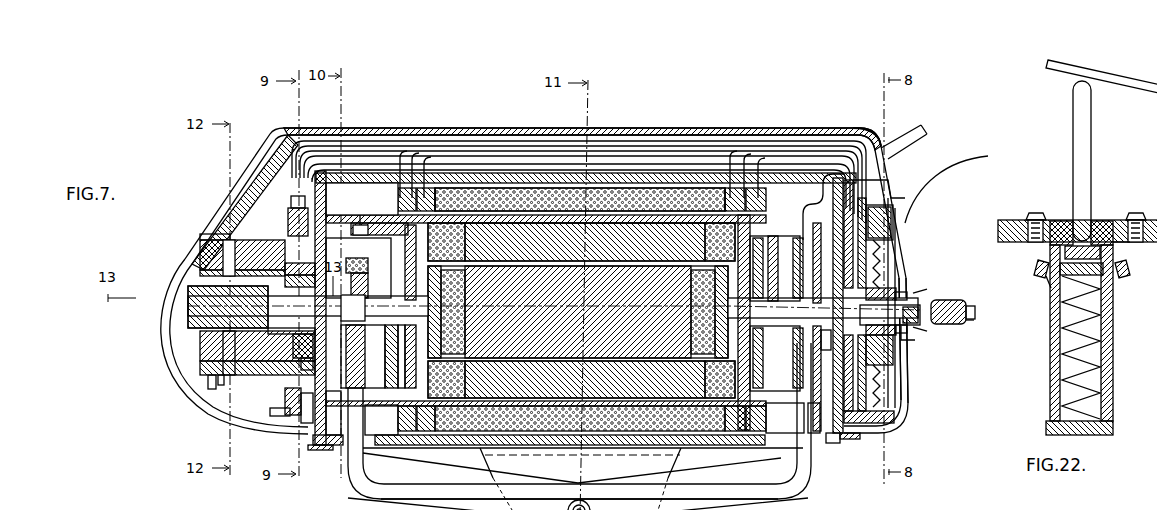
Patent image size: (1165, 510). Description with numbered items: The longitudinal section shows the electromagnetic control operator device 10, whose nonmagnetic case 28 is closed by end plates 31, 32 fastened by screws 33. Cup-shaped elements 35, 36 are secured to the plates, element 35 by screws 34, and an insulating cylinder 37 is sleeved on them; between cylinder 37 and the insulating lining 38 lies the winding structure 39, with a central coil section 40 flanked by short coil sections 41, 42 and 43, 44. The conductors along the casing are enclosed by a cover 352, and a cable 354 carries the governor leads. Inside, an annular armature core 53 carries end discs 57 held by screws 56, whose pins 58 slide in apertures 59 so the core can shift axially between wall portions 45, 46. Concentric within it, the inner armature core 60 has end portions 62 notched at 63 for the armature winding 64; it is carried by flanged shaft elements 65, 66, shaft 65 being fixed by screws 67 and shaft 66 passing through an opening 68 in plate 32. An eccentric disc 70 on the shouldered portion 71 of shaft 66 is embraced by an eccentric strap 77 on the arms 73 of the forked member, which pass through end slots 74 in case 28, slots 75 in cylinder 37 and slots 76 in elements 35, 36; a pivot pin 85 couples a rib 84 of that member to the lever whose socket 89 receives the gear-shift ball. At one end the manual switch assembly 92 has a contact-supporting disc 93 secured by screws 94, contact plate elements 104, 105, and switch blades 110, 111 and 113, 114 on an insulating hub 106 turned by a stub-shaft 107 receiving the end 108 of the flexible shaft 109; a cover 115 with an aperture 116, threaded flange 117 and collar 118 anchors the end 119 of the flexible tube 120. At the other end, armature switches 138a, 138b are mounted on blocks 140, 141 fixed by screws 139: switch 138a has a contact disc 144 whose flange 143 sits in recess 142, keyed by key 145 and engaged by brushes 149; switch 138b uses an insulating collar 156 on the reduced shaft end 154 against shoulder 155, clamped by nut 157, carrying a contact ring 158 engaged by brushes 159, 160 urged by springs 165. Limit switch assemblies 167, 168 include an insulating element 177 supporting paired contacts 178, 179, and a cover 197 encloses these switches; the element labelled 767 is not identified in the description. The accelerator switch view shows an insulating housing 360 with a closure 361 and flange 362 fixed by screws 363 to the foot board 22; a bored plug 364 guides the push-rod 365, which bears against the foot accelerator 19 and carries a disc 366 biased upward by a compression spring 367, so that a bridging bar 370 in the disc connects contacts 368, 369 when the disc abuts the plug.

In FIG. 7, the electromagnetic control operator device 10 is at (671, 121).
In FIG. 7, the cylindrical case 28 is at (612, 170).
In FIG. 7, the insulating lining 38 is at (596, 168).
In FIG. 7, the winding structure 39 is at (547, 193).
In FIG. 7, the central coil section 40 is at (505, 193).
In FIG. 7, the short coil section 41 is at (724, 183).
In FIG. 7, the short coil section 42 is at (748, 183).
In FIG. 7, the coil section 43 is at (414, 183).
In FIG. 7, the coil section 44 is at (395, 183).
In FIG. 7, the cover 352 is at (795, 121).
In FIG. 7, the cable 354 is at (912, 146).
In FIG. 7, the cover 115 is at (896, 207).
In FIG. 7, the cover 197 is at (205, 200).
In FIG. 7, the insulating cylinder 37 is at (372, 206).
In FIG. 7, the apertures 59 is at (350, 206).
In FIG. 7, the armature core 53 is at (546, 314).
In FIG. 7, the inner armature core element 60 is at (578, 312).
In FIG. 7, the end portions 62 is at (578, 312).
In FIG. 7, the notches 63 is at (446, 293).
In FIG. 7, the armature winding 64 is at (445, 345).
In FIG. 7, the shouldered portion 71 is at (360, 301).
In FIG. 7, the end plate 32 is at (314, 440).
In FIG. 7, the pins 58 is at (745, 232).
In FIG. 7, the cup-shaped element 36 is at (362, 255).
In FIG. 7, the annular recess 142 is at (349, 268).
In FIG. 7, the flanged shaft element 66 is at (366, 287).
In FIG. 7, the eccentric disc 70 is at (345, 330).
In FIG. 7, the eccentric straps 77 is at (350, 350).
In FIG. 7, the wall portion 46 is at (399, 356).
In FIG. 7, the disc 57 is at (600, 356).
In FIG. 7, the wall portion 45 is at (756, 353).
In FIG. 7, the screws 56 is at (584, 419).
In FIG. 7, the slots 75 is at (579, 413).
In FIG. 7, the slots 76 is at (356, 385).
In FIG. 7, the arms 73 is at (352, 458).
In FIG. 7, the end slots 74 is at (406, 440).
In FIG. 7, the rib 84 is at (563, 505).
In FIG. 7, the pivot pin 85 is at (600, 507).
In FIG. 7, the screws 33 is at (301, 443).
In FIG. 7, the end plate 31 is at (834, 437).
In FIG. 7, the insulating element 177 is at (394, 505).
In FIG. 7, the paired contacts 178 is at (257, 502).
In FIG. 7, the limit switch assembly 167 is at (288, 502).
In FIG. 7, the paired contacts 179 is at (335, 502).
In FIG. 7, the contact brush 159 is at (200, 250).
In FIG. 7, the spring 165 is at (200, 236).
In FIG. 7, the annular contact ring 158 is at (202, 265).
In FIG. 7, the collar element 156 is at (206, 278).
In FIG. 7, the clamping nut 157 is at (184, 290).
In FIG. 7, the outer end of shaft 154 is at (190, 314).
In FIG. 7, the contact brush 160 is at (184, 341).
In FIG. 7, the armature switch 138b is at (192, 346).
In FIG. 7, the screws 139 is at (202, 370).
In FIG. 7, the outer annular block 141 is at (211, 377).
In FIG. 7, the inner annular block 140 is at (278, 397).
In FIG. 7, the armature switch 138a is at (283, 382).
In FIG. 7, the limit switch assembly 168 is at (298, 410).
In FIG. 7, the shoulder 155 is at (286, 276).
In FIG. 7, the key element 145 is at (289, 289).
In FIG. 7, the contact disc 144 is at (284, 336).
In FIG. 7, the flange portion 143 is at (321, 361).
In FIG. 7, the opening 68 is at (310, 343).
In FIG. 7, the screw 767 is at (281, 208).
In FIG. 7, the contact brushes 149 is at (282, 222).
In FIG. 7, the screws 67 is at (774, 268).
In FIG. 7, the flanged shaft element 65 is at (777, 292).
In FIG. 7, the cup-shaped element 35 is at (766, 245).
In FIG. 7, the screws 34 is at (826, 305).
In FIG. 7, the hemispherical socket 89 is at (825, 342).
In FIG. 7, the contact-supporting disc 93 is at (849, 392).
In FIG. 7, the screws 94 is at (880, 412).
In FIG. 7, the contact plate element 104 is at (886, 256).
In FIG. 7, the switch blade 110 is at (882, 262).
In FIG. 7, the switch blade 111 is at (880, 246).
In FIG. 7, the switch assembly 92 is at (886, 272).
In FIG. 7, the contact element 105 is at (880, 354).
In FIG. 7, the switch blade 113 is at (886, 342).
In FIG. 7, the switch blade 114 is at (886, 366).
In FIG. 7, the stub-shaft 107 is at (885, 292).
In FIG. 7, the insulating flanged hub 106 is at (882, 323).
In FIG. 7, the end of flexible shaft 108 is at (893, 320).
In FIG. 7, the flexible switch-actuating shaft 109 is at (959, 302).
In FIG. 7, the aperture 116 is at (947, 292).
In FIG. 7, the end of flexible tube 119 is at (967, 296).
In FIG. 7, the flexible tube 120 is at (965, 313).
In FIG. 7, the flange portion 117 is at (940, 288).
In FIG. 7, the collar 118 is at (946, 322).
In FIG. 22, the foot accelerator 19 is at (1096, 66).
In FIG. 22, the push-rod 365 is at (1084, 183).
In FIG. 22, the flange 362 is at (1139, 211).
In FIG. 22, the screws 363 is at (1030, 206).
In FIG. 22, the centrally bored plug 364 is at (1058, 210).
In FIG. 22, the contact 368 is at (1052, 244).
In FIG. 22, the disc 366 is at (1106, 280).
In FIG. 22, the foot board 22 is at (1110, 238).
In FIG. 22, the contact 369 is at (1118, 262).
In FIG. 22, the contact bridging bar 370 is at (1042, 270).
In FIG. 22, the housing 360 is at (1106, 312).
In FIG. 22, the compression spring 367 is at (1094, 350).
In FIG. 22, the closure 361 is at (1096, 431).